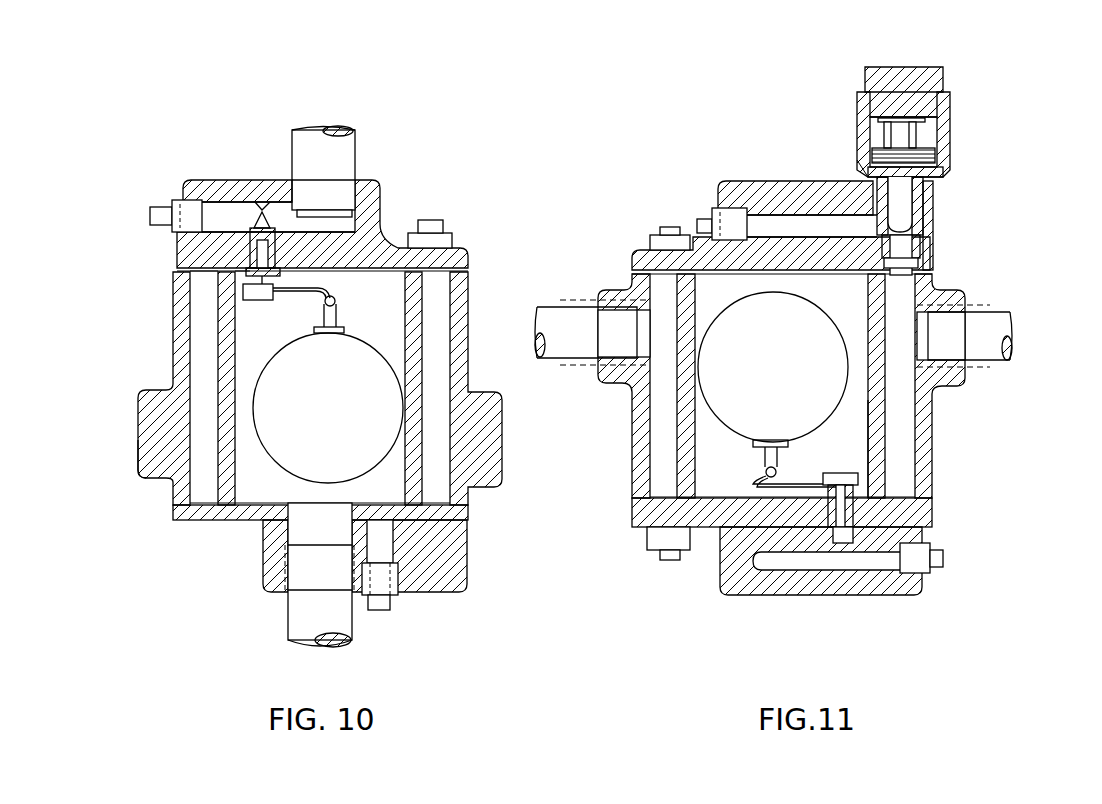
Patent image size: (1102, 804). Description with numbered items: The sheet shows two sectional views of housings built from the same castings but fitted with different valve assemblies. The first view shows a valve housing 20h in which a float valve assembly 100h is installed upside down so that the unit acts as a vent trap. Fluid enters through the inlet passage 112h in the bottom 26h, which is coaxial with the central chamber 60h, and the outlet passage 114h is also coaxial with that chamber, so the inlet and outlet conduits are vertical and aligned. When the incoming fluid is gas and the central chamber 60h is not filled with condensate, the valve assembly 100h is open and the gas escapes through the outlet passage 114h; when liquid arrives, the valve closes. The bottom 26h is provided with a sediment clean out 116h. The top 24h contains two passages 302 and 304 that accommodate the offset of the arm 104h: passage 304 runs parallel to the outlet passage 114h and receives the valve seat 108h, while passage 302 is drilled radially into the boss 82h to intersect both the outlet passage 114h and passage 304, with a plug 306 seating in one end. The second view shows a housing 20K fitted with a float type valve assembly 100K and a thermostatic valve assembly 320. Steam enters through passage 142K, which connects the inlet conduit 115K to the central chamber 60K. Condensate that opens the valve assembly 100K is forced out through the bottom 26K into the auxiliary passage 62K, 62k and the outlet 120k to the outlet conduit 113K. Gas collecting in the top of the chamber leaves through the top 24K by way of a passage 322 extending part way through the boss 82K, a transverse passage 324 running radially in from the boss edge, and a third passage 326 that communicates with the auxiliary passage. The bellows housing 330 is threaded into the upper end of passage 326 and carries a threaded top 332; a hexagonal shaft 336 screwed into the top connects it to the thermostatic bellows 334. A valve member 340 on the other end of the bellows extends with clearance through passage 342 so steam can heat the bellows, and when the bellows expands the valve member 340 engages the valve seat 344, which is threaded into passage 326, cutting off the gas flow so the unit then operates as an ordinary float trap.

In FIG. 10, the valve housing 20h is at (325, 386).
In FIG. 10, the top 24h is at (212, 181).
In FIG. 10, the bottom 26h is at (468, 542).
In FIG. 10, the central chamber 60h is at (190, 480).
In FIG. 10, the boss 82h is at (372, 226).
In FIG. 10, the float valve assembly 100h is at (397, 381).
In FIG. 10, the arm 104h is at (362, 318).
In FIG. 10, the valve seat 108h is at (336, 290).
In FIG. 10, the inlet passage 112h is at (268, 588).
In FIG. 10, the outlet passage 114h is at (300, 193).
In FIG. 10, the sediment clean out 116h is at (398, 596).
In FIG. 10, the passage 302 is at (262, 206).
In FIG. 10, the passage 304 is at (237, 233).
In FIG. 10, the plug 306 is at (186, 208).
In FIG. 11, the housing 20K is at (810, 337).
In FIG. 11, the top 24K is at (765, 177).
In FIG. 11, the bottom 26K is at (923, 596).
In FIG. 11, the central chamber 60K is at (866, 440).
In FIG. 11, the auxiliary passage 62K is at (633, 252).
In FIG. 11, the auxiliary passage 62k is at (910, 488).
In FIG. 11, the boss 82K is at (718, 187).
In FIG. 11, the float valve assembly 100K is at (762, 478).
In FIG. 11, the outlet conduit 113K is at (988, 320).
In FIG. 11, the inlet conduit 115K is at (572, 320).
In FIG. 11, the outlet 120k is at (940, 365).
In FIG. 11, the passage 142K is at (620, 383).
In FIG. 11, the thermostatic valve assembly 320 is at (947, 152).
In FIG. 11, the passage 322 is at (772, 258).
In FIG. 11, the transverse passage 324 is at (812, 272).
In FIG. 11, the passage 326 is at (912, 268).
In FIG. 11, the bellows housing 330 is at (952, 118).
In FIG. 11, the top 332 is at (930, 70).
In FIG. 11, the thermostatic bellows 334 is at (928, 153).
In FIG. 11, the hexagonal shaft 336 is at (900, 133).
In FIG. 11, the valve member 340 is at (905, 222).
In FIG. 11, the passage 342 is at (864, 164).
In FIG. 11, the valve seat 344 is at (925, 250).